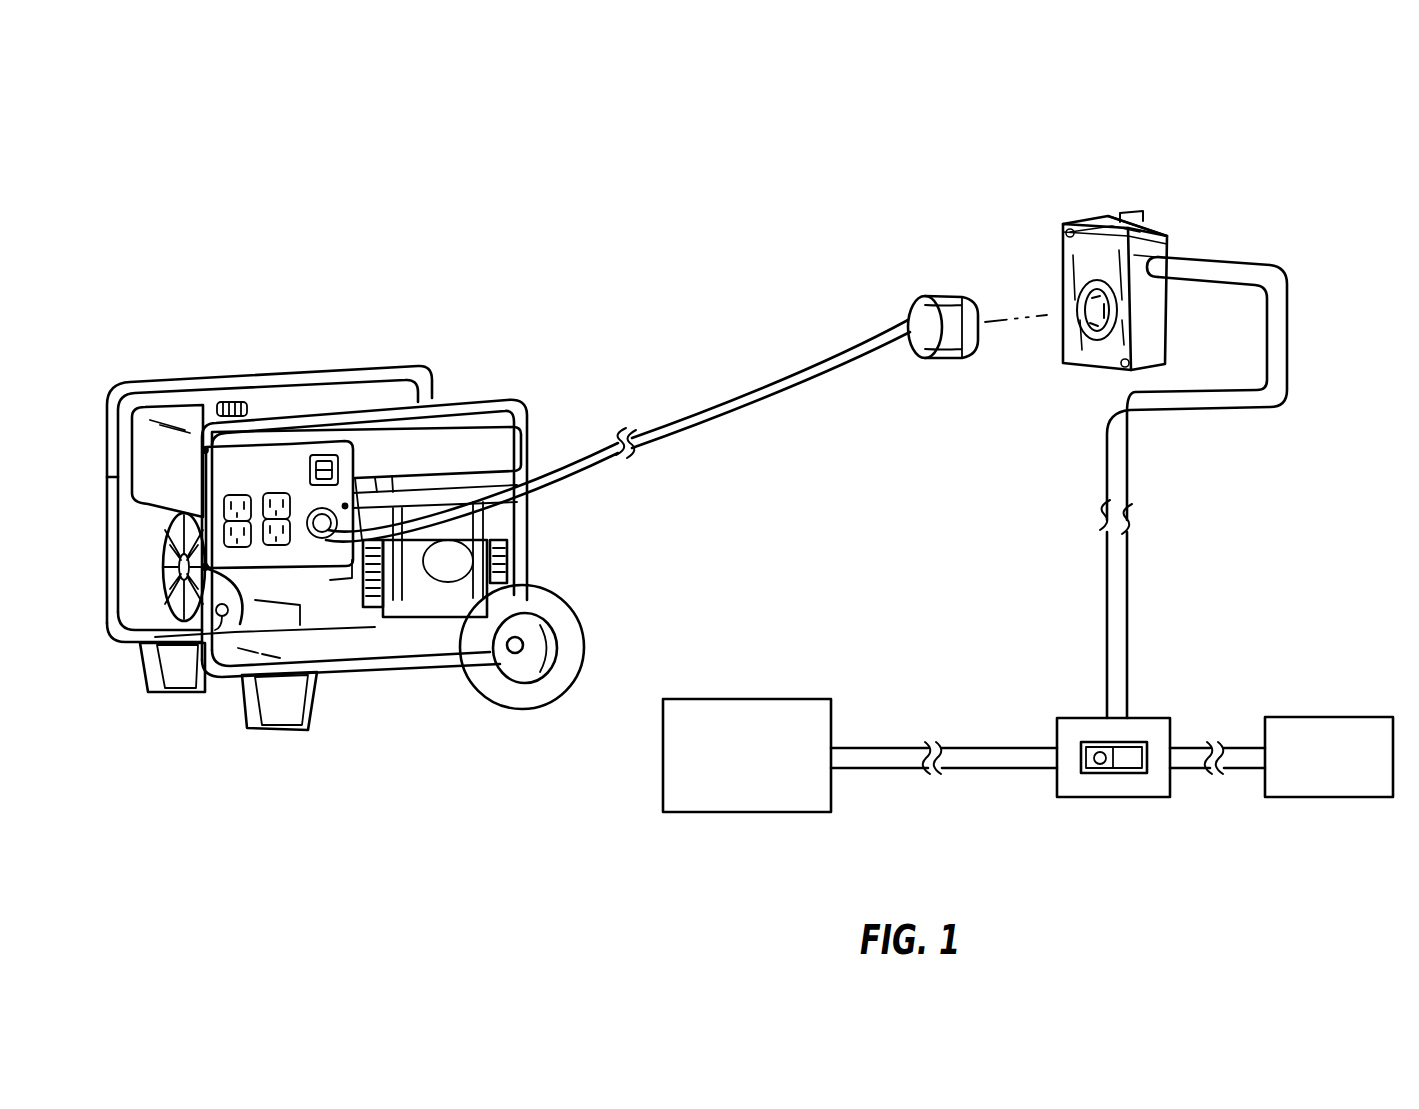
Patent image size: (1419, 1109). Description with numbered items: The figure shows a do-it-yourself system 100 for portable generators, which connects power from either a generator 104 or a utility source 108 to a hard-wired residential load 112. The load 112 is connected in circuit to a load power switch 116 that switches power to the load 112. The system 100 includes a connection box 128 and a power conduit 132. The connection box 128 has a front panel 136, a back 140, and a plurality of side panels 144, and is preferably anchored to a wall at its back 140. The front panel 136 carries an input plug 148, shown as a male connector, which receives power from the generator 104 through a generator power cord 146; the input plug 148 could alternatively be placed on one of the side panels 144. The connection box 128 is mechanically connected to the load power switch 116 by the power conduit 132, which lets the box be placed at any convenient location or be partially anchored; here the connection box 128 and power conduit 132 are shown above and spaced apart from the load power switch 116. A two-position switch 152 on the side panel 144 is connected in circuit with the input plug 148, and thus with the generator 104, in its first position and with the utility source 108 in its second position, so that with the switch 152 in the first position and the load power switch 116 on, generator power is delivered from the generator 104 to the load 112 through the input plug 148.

The do-it-yourself system 100 is at (1175, 143).
The generator 104 is at (460, 355).
The utility source 108 is at (715, 699).
The load 112 is at (1305, 717).
The load power switch 116 is at (1145, 718).
The connection box 128 is at (1157, 224).
The power conduit 132 is at (1105, 462).
The front panel 136 is at (1165, 243).
The back 140 is at (1172, 290).
The side panels 144 is at (1155, 331).
The generator power cord 146 is at (762, 405).
The input plug 148 is at (1086, 335).
The two-position switch 152 is at (1131, 214).